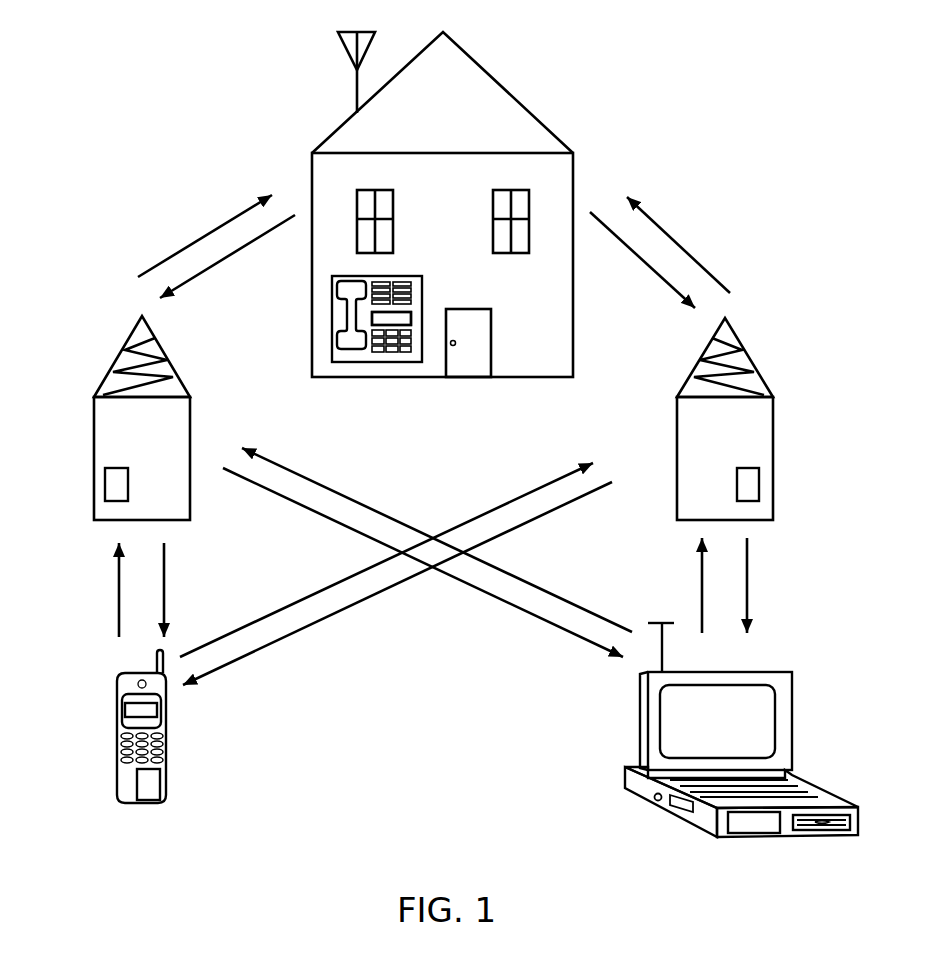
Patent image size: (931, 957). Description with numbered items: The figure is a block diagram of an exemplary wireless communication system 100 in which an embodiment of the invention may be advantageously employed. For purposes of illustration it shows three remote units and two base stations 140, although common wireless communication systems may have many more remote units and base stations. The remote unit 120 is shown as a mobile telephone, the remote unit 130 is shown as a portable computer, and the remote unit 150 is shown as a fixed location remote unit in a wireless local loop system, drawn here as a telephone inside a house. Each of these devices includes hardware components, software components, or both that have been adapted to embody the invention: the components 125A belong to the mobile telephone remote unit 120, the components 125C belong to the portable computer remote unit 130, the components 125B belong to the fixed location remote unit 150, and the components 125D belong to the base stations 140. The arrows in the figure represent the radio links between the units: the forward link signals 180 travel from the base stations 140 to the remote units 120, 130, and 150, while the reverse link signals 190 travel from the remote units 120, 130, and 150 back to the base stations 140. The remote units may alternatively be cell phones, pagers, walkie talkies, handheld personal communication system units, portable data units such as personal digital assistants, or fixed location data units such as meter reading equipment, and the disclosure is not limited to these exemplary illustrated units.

The wireless communication system 100 is at (162, 73).
The remote unit 120 is at (122, 685).
The components 125A is at (152, 787).
The components 125B is at (402, 317).
The components 125C is at (760, 823).
The components 125D is at (105, 487).
The remote unit 130 is at (770, 672).
The base stations 140 is at (118, 355).
The remote unit 150 is at (332, 327).
The forward link signals 180 is at (212, 232).
The reverse link signals 190 is at (215, 265).